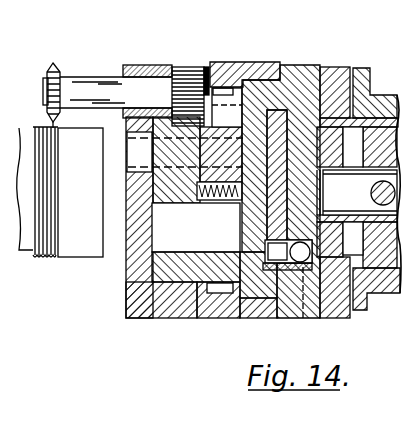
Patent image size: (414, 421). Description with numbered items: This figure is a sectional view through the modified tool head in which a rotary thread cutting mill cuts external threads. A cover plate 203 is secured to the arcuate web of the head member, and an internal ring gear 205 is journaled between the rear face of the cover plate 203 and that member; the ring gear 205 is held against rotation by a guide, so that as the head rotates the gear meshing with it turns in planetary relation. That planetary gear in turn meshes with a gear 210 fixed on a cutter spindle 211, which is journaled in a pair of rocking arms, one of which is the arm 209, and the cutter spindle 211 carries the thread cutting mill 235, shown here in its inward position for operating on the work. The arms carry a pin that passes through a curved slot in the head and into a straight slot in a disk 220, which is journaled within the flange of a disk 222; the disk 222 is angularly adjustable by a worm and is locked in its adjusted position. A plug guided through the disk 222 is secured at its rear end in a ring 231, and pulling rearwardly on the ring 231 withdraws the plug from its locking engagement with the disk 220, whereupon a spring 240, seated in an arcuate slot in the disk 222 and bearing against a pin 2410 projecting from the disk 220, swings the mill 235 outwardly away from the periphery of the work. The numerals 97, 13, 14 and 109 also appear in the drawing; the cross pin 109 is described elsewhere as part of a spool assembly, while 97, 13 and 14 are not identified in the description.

The housing portion 97 is at (7, 83).
The ring 231 is at (51, 185).
The member 13 is at (6, 172).
The member 14 is at (12, 190).
The arm 209 is at (16, 209).
The thread cutting mill 235 is at (53, 66).
The cutter spindle 211 is at (78, 82).
The gear 210 is at (203, 57).
The cover plate 203 is at (125, 308).
The internal ring gear 205 is at (222, 318).
The disk 220 is at (275, 118).
The disk 222 is at (298, 122).
The spring 240 is at (303, 320).
The pin 2410 is at (279, 248).
The cross pin 109 is at (371, 195).